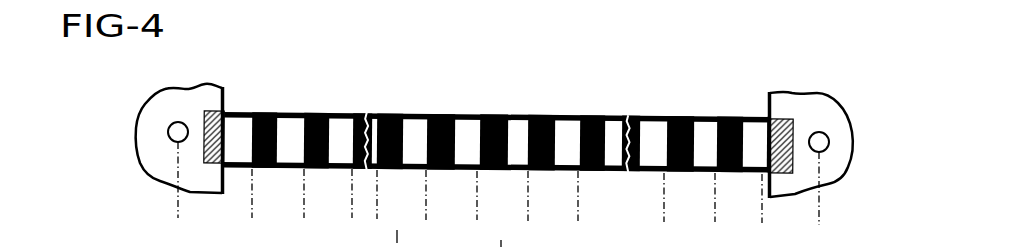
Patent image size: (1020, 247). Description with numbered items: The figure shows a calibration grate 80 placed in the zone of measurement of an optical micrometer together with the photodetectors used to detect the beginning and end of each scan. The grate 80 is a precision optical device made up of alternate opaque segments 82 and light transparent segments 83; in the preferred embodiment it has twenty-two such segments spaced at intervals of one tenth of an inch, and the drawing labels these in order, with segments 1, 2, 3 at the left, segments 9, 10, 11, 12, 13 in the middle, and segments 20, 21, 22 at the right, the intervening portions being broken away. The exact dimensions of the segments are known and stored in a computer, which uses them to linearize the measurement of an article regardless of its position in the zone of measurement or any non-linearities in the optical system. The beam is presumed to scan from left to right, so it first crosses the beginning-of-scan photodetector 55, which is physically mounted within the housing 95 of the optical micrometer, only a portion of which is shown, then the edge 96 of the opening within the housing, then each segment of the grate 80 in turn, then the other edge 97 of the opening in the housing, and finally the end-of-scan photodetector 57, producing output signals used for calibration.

The grate 80 is at (578, 118).
The opaque segments 82 is at (317, 111).
The light transparent segments 83 is at (465, 122).
The housing 95 is at (210, 100).
The edge of the opening within the housing 96 is at (227, 98).
The other edge of the opening in the housing 97 is at (770, 102).
The beginning-of-scan photodetector 55 is at (171, 128).
The end-of-scan photodetector 57 is at (822, 132).
The segment 1 is at (237, 196).
The segment 2 is at (288, 196).
The segment 3 is at (337, 196).
The segment 9 is at (392, 206).
The segment 10 is at (444, 197).
The segment 11 is at (496, 209).
The segment 12 is at (547, 198).
The segment 13 is at (595, 198).
The segment 20 is at (683, 200).
The segment 21 is at (732, 200).
The segment 22 is at (781, 200).